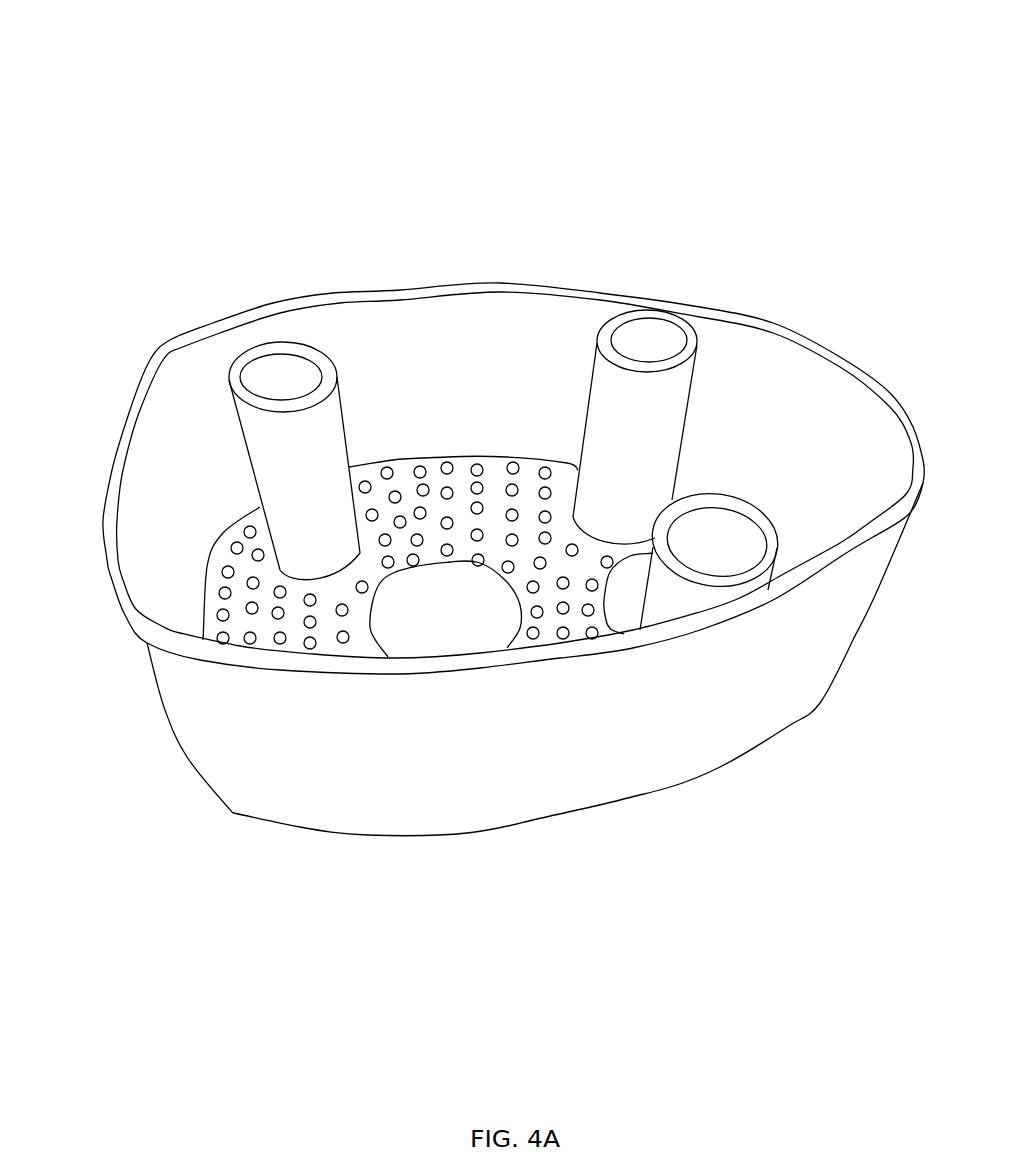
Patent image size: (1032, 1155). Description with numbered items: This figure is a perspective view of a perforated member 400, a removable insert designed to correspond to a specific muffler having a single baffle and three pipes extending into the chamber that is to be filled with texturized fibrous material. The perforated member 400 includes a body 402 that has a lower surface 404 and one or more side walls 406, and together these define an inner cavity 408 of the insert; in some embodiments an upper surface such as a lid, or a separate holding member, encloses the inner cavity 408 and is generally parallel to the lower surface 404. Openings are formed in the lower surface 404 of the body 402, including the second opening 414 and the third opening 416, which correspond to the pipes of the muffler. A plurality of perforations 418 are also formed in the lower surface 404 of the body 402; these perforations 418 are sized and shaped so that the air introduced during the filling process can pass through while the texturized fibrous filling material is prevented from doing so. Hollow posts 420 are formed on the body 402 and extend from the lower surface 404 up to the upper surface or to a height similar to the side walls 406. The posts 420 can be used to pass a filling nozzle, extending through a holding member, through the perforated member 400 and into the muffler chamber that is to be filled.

The perforated member 400 is at (134, 56).
The body 402 is at (147, 680).
The lower surface 404 is at (501, 830).
The side walls 406 is at (697, 687).
The inner cavity 408 is at (392, 318).
The second opening 414 is at (447, 607).
The third opening 416 is at (623, 603).
The perforations 418 is at (513, 468).
The posts 420 is at (278, 373).